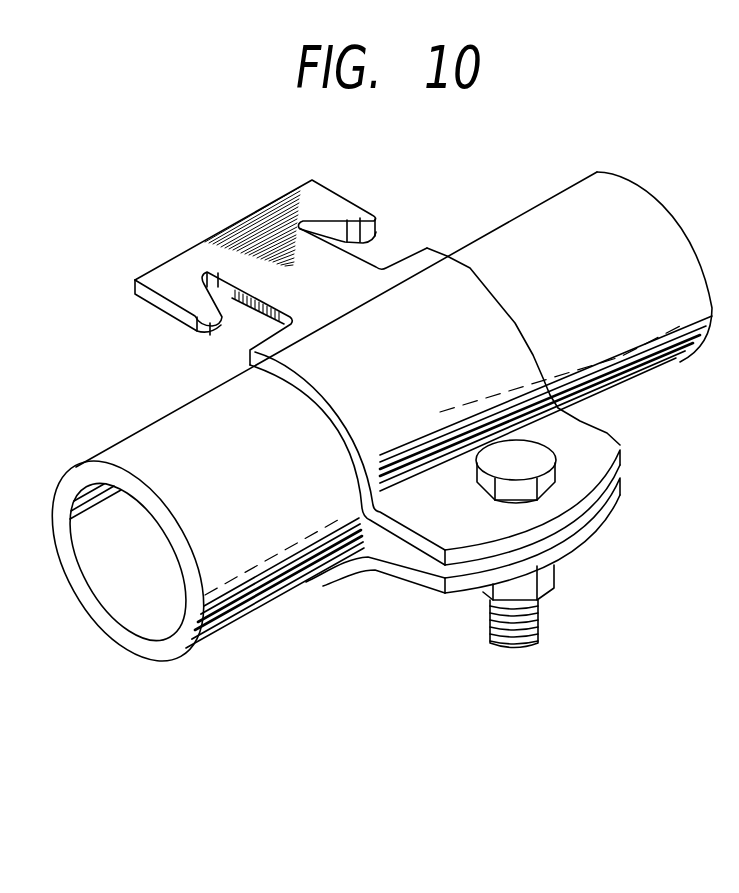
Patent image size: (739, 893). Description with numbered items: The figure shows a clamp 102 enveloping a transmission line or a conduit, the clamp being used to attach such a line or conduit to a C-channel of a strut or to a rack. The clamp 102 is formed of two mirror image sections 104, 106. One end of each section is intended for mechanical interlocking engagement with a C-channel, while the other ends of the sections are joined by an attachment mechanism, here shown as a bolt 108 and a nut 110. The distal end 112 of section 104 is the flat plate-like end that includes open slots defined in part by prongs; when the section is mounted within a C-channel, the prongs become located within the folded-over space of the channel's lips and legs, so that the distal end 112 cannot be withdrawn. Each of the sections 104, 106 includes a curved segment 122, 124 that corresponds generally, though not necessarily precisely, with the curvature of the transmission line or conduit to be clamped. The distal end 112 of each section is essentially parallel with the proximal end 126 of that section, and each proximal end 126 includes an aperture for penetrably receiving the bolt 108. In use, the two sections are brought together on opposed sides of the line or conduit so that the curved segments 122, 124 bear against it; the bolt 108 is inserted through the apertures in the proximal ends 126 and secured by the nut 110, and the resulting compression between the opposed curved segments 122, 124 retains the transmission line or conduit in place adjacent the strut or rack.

The clamp 102 is at (463, 323).
The section 104 is at (411, 288).
The section 106 is at (320, 582).
The bolt 108 is at (520, 641).
The nut 110 is at (548, 582).
The distal end 112 is at (243, 242).
The curved segment 122 is at (348, 373).
The curved segment 124 is at (368, 560).
The proximal end 126 is at (553, 505).